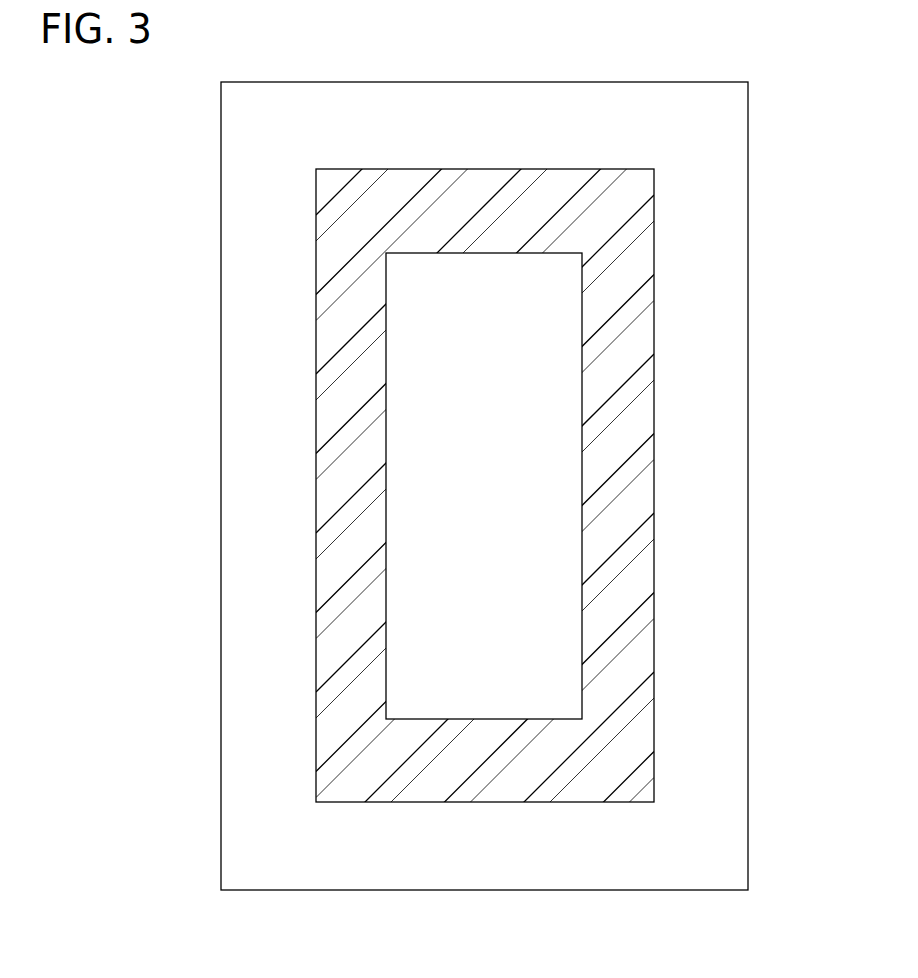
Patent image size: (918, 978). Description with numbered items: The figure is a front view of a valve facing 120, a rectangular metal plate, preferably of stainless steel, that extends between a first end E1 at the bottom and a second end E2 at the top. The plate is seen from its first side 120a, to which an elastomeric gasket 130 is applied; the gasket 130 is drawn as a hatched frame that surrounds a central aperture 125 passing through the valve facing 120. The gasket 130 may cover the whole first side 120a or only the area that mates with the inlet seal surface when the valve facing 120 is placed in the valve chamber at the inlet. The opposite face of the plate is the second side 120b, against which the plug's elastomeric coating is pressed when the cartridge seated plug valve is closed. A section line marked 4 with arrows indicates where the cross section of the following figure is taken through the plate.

The valve facing 120 is at (221, 755).
The first side of valve facing 120a is at (508, 856).
The second side of valve facing 120b is at (748, 788).
The central aperture 125 is at (508, 510).
The elastomeric gasket 130 is at (316, 425).
The first end E1 is at (480, 890).
The second end E2 is at (487, 82).
The section line for FIG. 4 is at (807, 462).